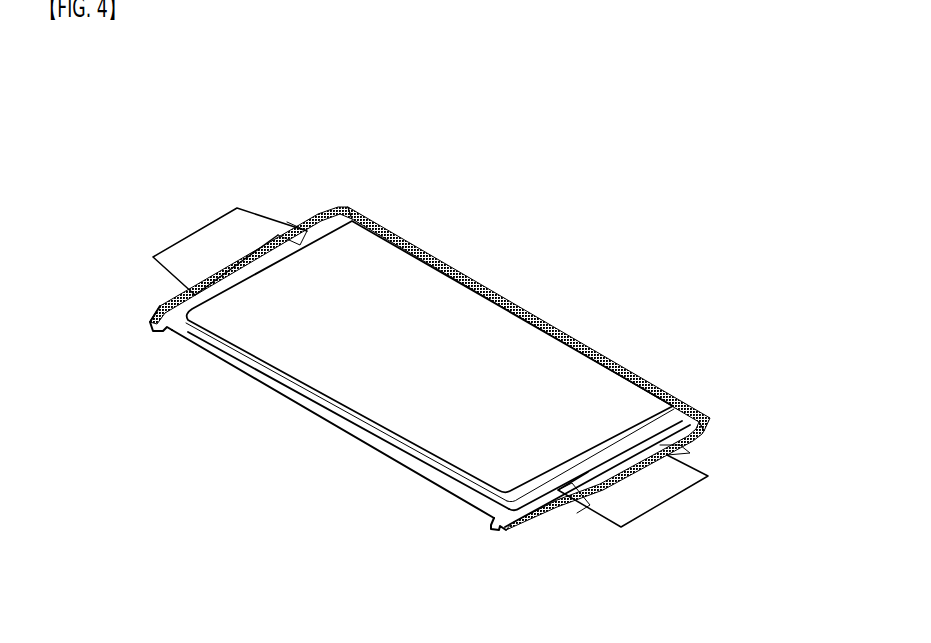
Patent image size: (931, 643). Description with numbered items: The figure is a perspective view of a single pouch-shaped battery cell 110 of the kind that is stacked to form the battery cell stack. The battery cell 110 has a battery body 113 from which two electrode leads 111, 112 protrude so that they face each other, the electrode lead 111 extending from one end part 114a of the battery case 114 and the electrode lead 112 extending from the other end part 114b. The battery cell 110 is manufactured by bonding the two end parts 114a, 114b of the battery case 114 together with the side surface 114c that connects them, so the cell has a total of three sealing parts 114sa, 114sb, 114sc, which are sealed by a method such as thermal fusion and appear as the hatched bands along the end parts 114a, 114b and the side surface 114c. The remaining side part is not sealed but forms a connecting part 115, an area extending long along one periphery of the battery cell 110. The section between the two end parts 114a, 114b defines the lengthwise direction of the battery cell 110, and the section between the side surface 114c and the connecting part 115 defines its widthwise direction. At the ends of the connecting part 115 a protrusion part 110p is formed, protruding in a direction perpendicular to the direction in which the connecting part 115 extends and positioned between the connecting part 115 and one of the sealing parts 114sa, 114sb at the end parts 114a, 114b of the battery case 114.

The battery cell 110 is at (104, 105).
The protrusion part 110p is at (153, 322).
The electrode lead 111 is at (210, 240).
The electrode lead 112 is at (670, 502).
The battery body 113 is at (438, 297).
The battery case 114 is at (465, 371).
The end part of battery case 114a is at (262, 226).
The end part of battery case 114b is at (643, 518).
The side surface of battery case 114c is at (529, 319).
The sealing part 114sa is at (300, 222).
The sealing part 114sb is at (701, 440).
The sealing part 114sc is at (627, 366).
The connecting part 115 is at (360, 430).